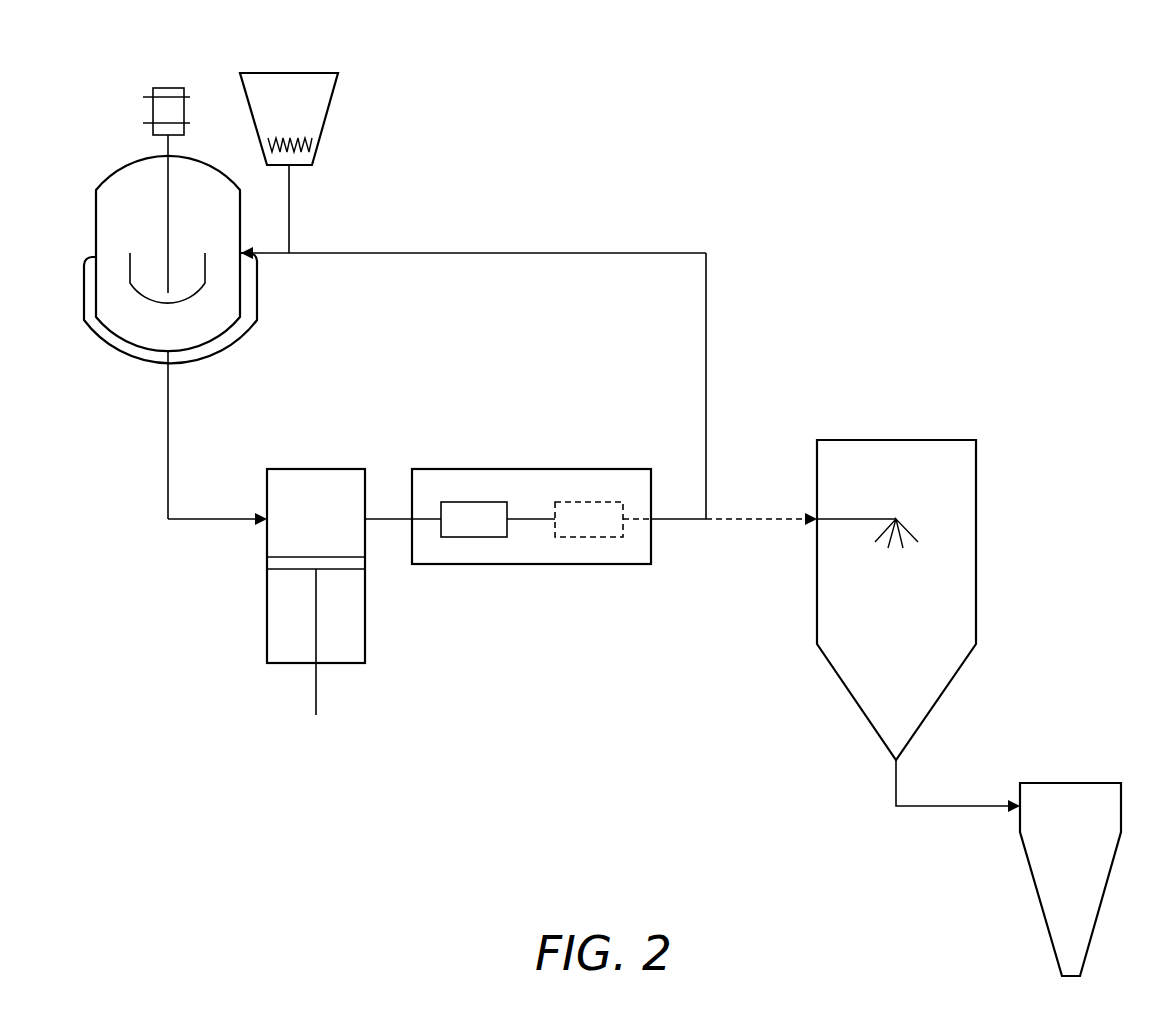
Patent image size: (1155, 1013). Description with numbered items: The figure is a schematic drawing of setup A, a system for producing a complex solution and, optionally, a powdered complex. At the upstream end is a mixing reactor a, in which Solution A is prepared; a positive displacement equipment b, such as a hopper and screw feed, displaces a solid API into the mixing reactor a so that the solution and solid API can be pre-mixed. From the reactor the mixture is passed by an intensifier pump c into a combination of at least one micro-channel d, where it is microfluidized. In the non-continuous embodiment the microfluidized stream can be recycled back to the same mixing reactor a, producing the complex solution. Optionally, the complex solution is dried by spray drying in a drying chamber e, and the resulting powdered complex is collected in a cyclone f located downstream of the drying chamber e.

The mixing reactor a is at (175, 306).
The positive displacement equipment b is at (297, 163).
The intensifier pump c is at (338, 592).
The combination of at least one micro-channel d is at (529, 422).
The drying chamber e is at (918, 626).
The cyclone f is at (1070, 879).